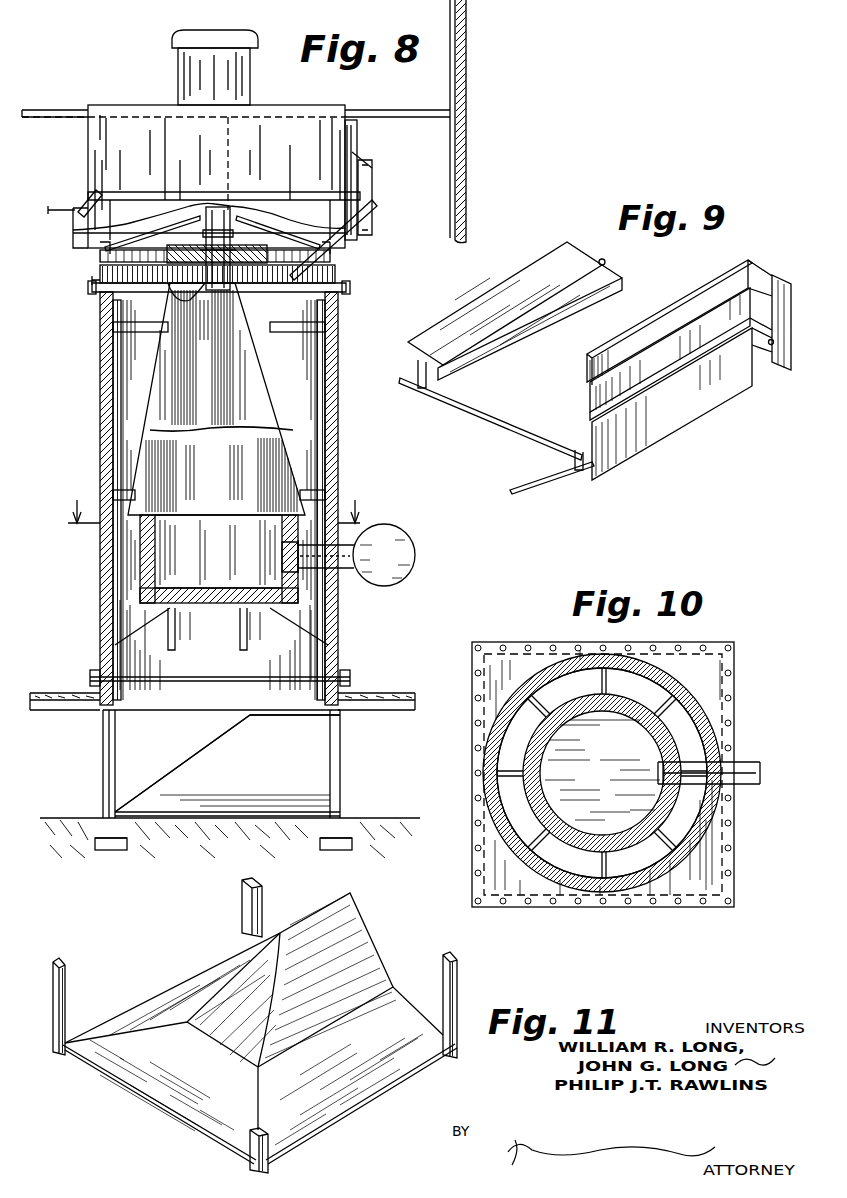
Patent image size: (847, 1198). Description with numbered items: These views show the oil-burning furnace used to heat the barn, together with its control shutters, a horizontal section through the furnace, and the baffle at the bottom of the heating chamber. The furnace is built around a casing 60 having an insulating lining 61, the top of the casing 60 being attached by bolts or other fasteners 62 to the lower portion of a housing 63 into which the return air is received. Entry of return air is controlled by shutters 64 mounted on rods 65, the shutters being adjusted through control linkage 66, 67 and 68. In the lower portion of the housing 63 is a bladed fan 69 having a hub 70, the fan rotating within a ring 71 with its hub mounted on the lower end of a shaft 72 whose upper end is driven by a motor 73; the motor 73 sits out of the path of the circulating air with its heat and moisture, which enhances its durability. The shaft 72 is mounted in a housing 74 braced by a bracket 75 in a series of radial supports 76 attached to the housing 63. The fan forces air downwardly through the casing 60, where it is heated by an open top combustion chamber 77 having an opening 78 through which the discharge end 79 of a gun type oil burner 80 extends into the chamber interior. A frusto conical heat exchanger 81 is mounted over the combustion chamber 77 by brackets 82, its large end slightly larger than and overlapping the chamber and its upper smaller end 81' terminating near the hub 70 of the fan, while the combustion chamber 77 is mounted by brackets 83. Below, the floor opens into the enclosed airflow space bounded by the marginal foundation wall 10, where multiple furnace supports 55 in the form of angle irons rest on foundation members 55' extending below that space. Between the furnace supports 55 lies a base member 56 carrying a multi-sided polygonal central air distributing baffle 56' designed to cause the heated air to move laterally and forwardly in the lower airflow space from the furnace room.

In FIG. 8, the motor 73 is at (190, 70).
In FIG. 8, the shutters 64 is at (60, 208).
In FIG. 9, the shutters 64 is at (488, 296).
In FIG. 8, the control linkage 67 is at (374, 176).
In FIG. 8, the housing 63 is at (340, 268).
In FIG. 8, the radial supports 76 is at (160, 236).
In FIG. 8, the bracket 75 is at (262, 213).
In FIG. 8, the shaft 72 is at (206, 238).
In FIG. 8, the housing 74 is at (232, 236).
In FIG. 8, the hub 70 is at (190, 262).
In FIG. 8, the bladed fan 69 is at (100, 258).
In FIG. 8, the ring 71 is at (92, 280).
In FIG. 8, the fasteners 62 is at (348, 290).
In FIG. 10, the fasteners 62 is at (478, 752).
In FIG. 8, the casing 60 is at (338, 424).
In FIG. 10, the casing 60 is at (566, 658).
In FIG. 8, the insulating lining 61 is at (330, 376).
In FIG. 10, the insulating lining 61 is at (672, 678).
In FIG. 8, the brackets 82 is at (113, 327).
In FIG. 8, the frusto conical heat exchanger 81 is at (220, 399).
In FIG. 8, the upper smaller end of the heat exchanger 81' is at (200, 304).
In FIG. 8, the marginal foundation wall 10 is at (212, 502).
In FIG. 8, the open top combustion chamber 77 is at (216, 524).
In FIG. 10, the open top combustion chamber 77 is at (570, 720).
In FIG. 8, the discharge end 79 is at (298, 550).
In FIG. 10, the discharge end 79 is at (748, 760).
In FIG. 8, the opening 78 is at (282, 574).
In FIG. 8, the gun type oil burner 80 is at (392, 532).
In FIG. 8, the brackets 83 is at (196, 612).
In FIG. 10, the brackets 83 is at (596, 684).
In FIG. 8, the furnace supports 55 is at (202, 764).
In FIG. 11, the furnace supports 55 is at (275, 1026).
In FIG. 8, the foundation members 55' is at (223, 865).
In FIG. 8, the base member 56 is at (227, 765).
In FIG. 11, the base member 56 is at (260, 1048).
In FIG. 8, the central air distributing baffle 56' is at (227, 763).
In FIG. 11, the central air distributing baffle 56' is at (304, 980).
In FIG. 9, the rods 65 is at (602, 258).
In FIG. 9, the control linkage 66 is at (768, 334).
In FIG. 9, the control linkage 68 is at (490, 415).